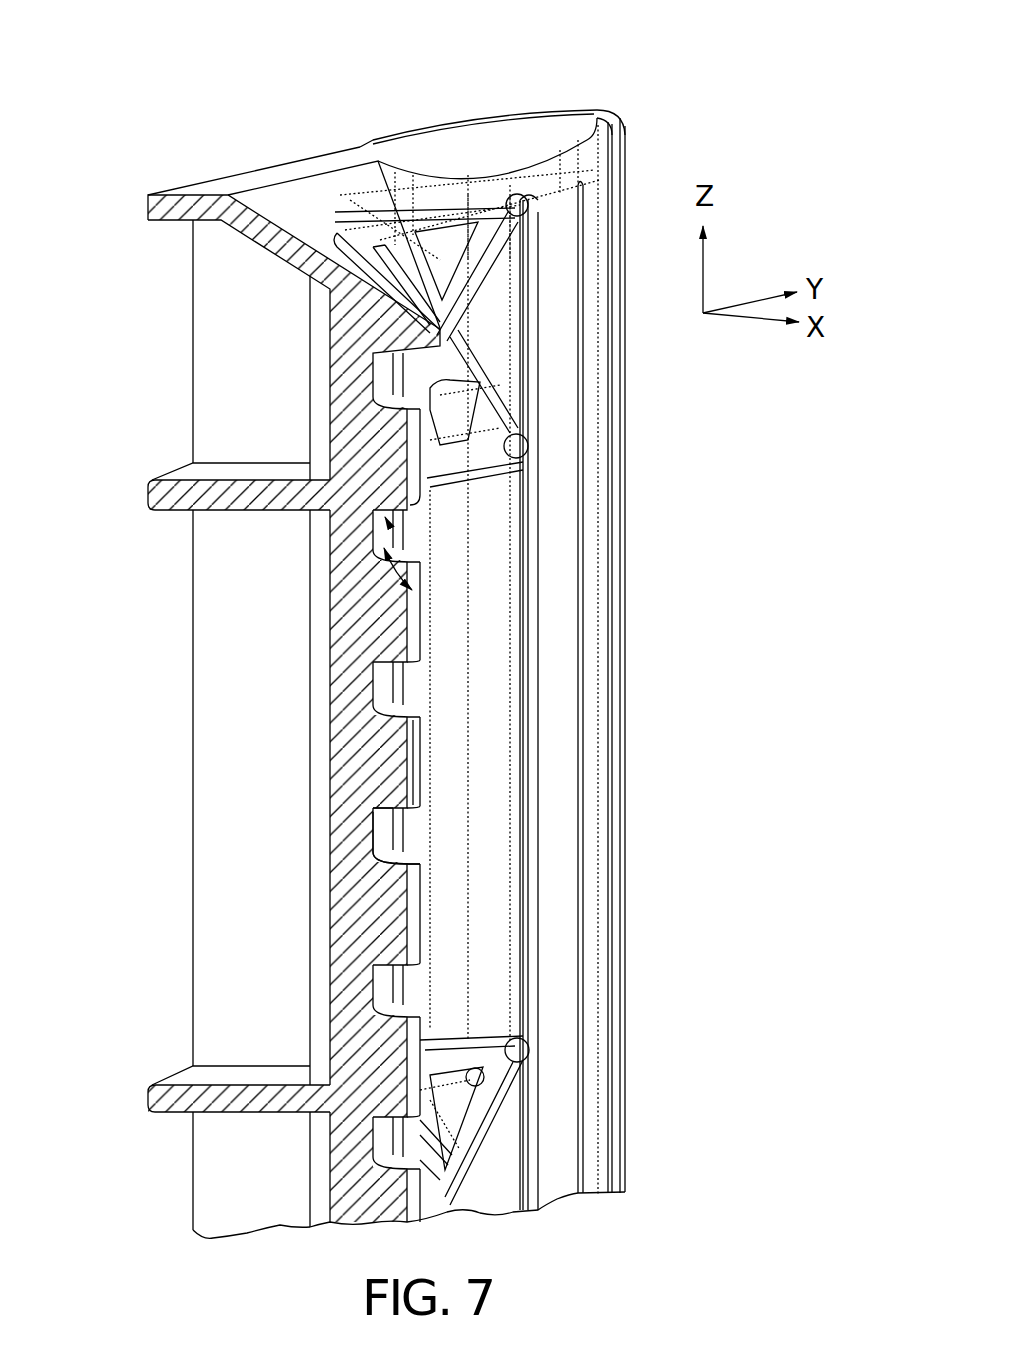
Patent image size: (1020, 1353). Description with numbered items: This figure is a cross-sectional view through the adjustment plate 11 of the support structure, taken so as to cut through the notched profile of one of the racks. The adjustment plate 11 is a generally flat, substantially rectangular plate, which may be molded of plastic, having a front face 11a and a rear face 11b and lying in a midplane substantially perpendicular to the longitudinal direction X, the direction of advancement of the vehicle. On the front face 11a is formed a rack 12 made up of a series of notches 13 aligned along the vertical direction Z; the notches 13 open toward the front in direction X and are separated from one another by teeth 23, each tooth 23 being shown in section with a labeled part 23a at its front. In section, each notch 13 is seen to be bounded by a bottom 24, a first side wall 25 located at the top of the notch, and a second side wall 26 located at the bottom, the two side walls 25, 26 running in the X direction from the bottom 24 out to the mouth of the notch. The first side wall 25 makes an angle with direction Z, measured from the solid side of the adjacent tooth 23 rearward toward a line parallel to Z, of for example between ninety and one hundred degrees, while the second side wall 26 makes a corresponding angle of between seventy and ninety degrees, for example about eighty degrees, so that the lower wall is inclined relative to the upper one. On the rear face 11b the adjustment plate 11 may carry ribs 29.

The adjustment plate 11 is at (277, 118).
The front face 11a is at (647, 106).
The rear face 11b is at (173, 377).
The rack 12 is at (398, 252).
The notch 13 is at (422, 531).
The tooth 23 is at (449, 488).
The projection side surface 23a is at (418, 771).
The bottom 24 is at (387, 843).
The first side wall 25 is at (380, 812).
The second side wall 26 is at (387, 855).
The rib 29 is at (188, 495).